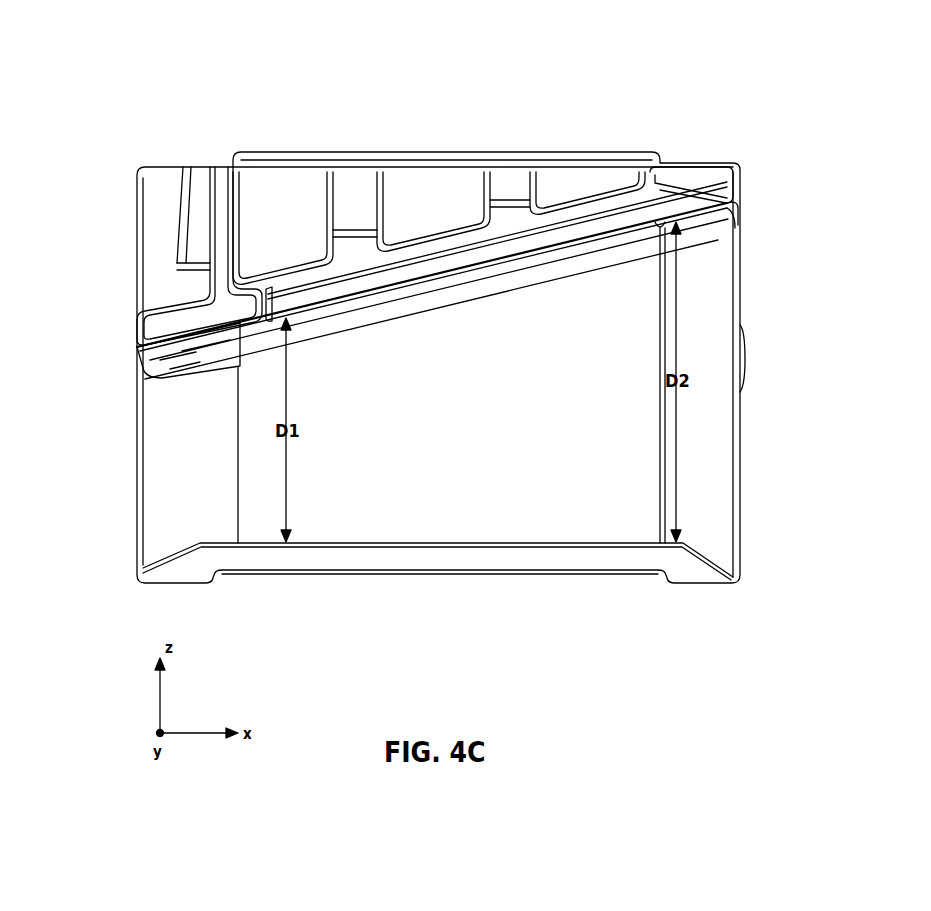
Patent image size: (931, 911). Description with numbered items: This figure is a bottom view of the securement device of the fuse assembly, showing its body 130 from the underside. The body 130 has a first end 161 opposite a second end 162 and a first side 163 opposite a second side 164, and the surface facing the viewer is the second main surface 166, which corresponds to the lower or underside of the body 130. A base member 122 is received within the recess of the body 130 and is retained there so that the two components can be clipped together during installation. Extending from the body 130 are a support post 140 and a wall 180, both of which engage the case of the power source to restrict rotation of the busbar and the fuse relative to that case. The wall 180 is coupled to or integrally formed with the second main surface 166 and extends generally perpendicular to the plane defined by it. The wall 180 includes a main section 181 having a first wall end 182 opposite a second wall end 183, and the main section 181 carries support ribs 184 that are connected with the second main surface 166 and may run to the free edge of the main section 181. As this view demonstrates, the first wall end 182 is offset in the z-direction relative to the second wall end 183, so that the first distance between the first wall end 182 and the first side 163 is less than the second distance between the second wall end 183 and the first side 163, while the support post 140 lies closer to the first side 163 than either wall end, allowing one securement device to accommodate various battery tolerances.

The base member 122 is at (501, 70).
The body 130 is at (311, 552).
The support post 140 is at (150, 327).
The first end 161 is at (134, 265).
The second end 162 is at (744, 306).
The first side 163 is at (466, 552).
The second side 164 is at (375, 153).
The second main surface 166 is at (619, 437).
The wall 180 is at (596, 190).
The main section 181 is at (505, 282).
The first wall end 182 is at (274, 300).
The second wall end 183 is at (735, 180).
The support ribs 184 is at (357, 176).